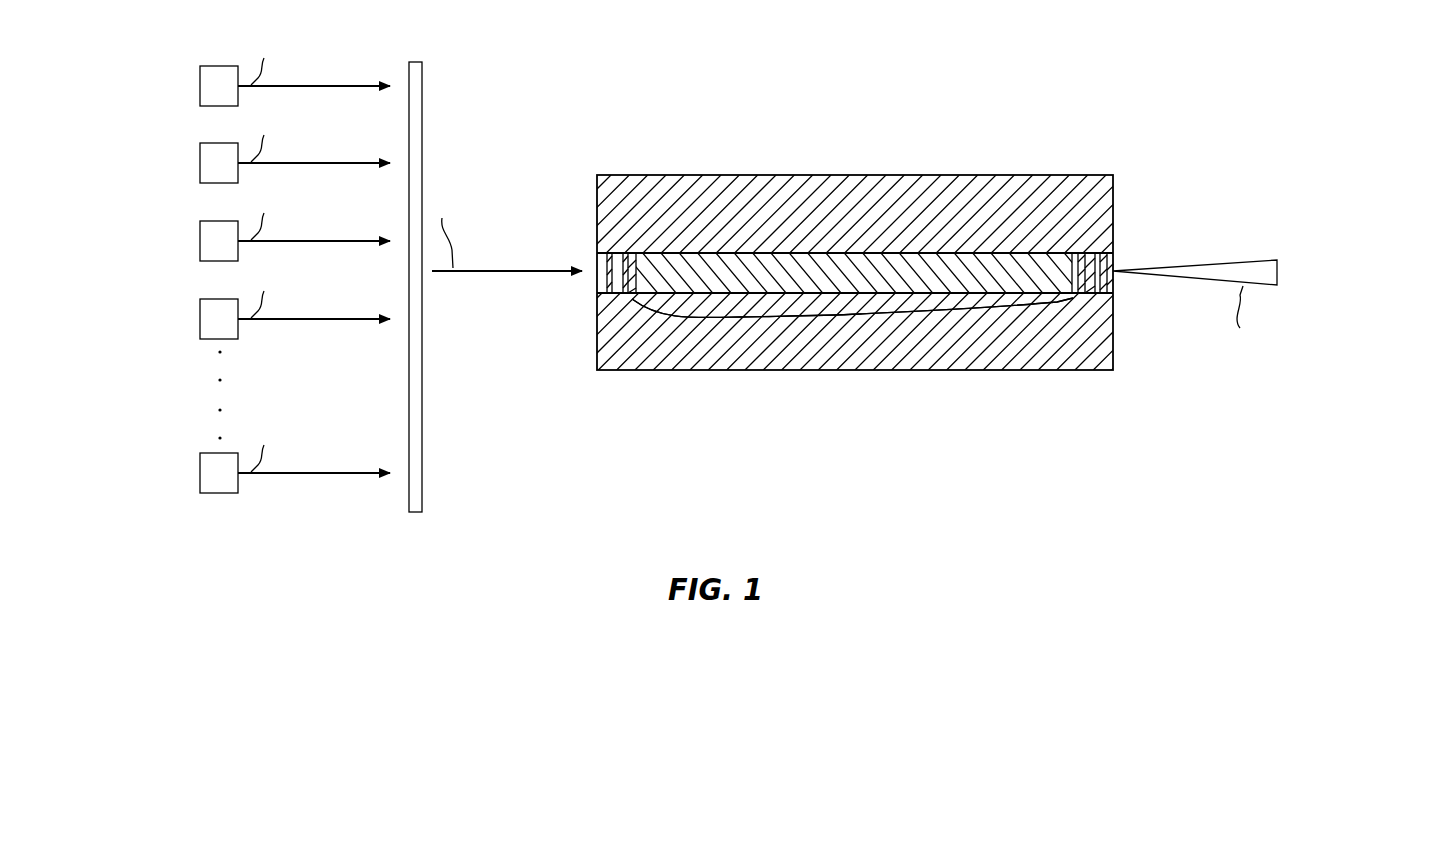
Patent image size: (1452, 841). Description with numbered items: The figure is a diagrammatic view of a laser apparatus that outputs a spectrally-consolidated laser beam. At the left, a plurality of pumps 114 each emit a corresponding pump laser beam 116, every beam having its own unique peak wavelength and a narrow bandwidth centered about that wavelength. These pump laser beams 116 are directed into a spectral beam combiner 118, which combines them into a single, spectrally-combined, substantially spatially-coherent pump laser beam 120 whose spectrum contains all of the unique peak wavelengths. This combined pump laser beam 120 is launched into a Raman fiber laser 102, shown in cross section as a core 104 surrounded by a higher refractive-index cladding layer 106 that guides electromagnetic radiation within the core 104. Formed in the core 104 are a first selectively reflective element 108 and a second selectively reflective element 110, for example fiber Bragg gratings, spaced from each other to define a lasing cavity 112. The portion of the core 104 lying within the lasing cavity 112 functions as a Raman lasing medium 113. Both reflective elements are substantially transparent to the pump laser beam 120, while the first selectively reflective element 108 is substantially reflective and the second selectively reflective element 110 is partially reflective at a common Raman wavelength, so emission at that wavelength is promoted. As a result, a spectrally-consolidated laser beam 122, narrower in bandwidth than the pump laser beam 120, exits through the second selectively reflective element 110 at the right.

The Raman fiber laser 102 is at (857, 265).
The core 104 is at (832, 280).
The cladding layer 106 is at (753, 203).
The first selectively reflective element 108 is at (630, 297).
The second selectively reflective element 110 is at (1095, 297).
The lasing cavity 112 is at (852, 320).
The Raman lasing medium 113 is at (852, 377).
The pumps 114 is at (212, 88).
The pump laser beams 116 is at (313, 85).
The spectral beam combiner 118 is at (415, 75).
The substantially spatially-coherent pump laser beam 120 is at (508, 273).
The spectrally-consolidated laser beam 122 is at (1250, 272).